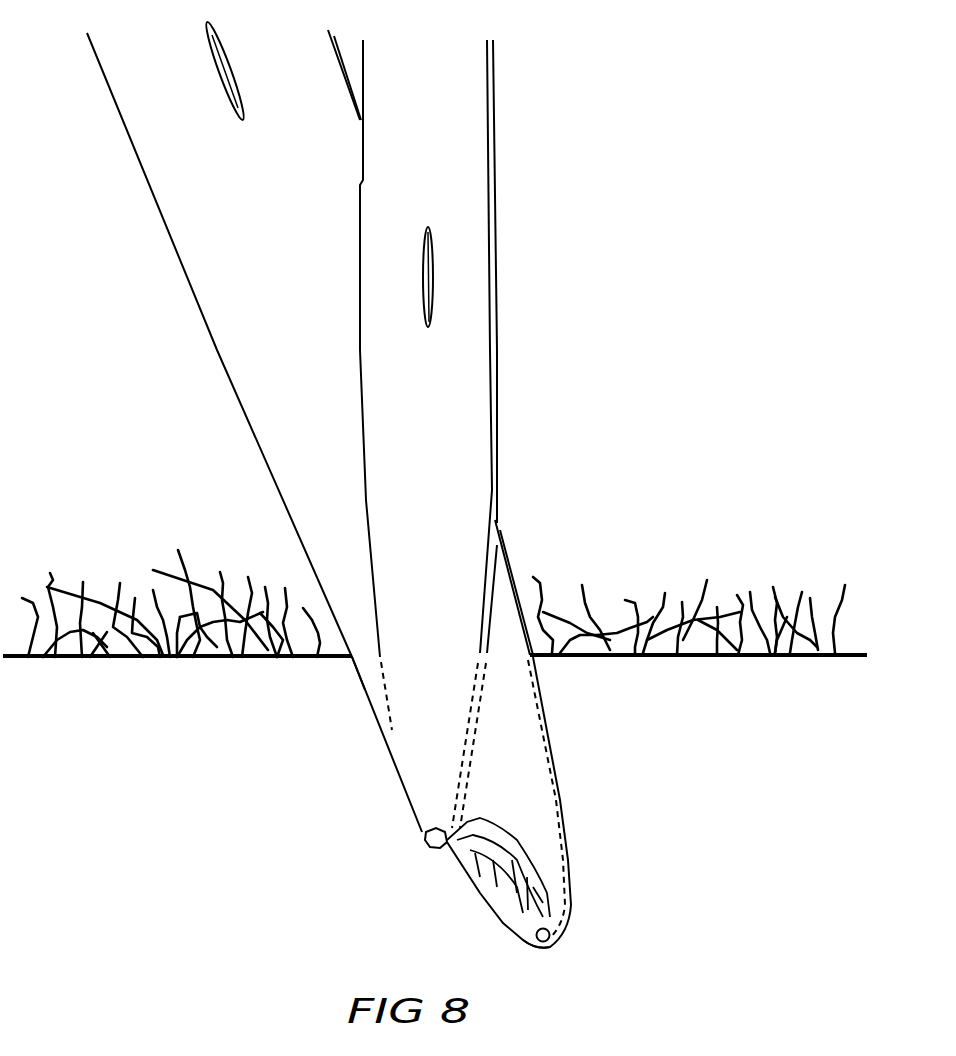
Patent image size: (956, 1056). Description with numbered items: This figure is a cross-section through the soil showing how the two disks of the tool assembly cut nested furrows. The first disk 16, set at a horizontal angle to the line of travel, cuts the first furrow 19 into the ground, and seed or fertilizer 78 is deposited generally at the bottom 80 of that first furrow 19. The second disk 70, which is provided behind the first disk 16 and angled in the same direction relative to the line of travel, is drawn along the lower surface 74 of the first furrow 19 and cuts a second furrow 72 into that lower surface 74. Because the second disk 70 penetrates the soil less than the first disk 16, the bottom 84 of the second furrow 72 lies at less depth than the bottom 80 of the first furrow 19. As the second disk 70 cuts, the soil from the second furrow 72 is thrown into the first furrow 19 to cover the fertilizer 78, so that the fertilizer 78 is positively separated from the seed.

The first disk 16 is at (265, 358).
The second disk 70 is at (453, 350).
The lower surface 74 is at (362, 681).
The second furrow 72 is at (463, 820).
The first furrow 19 is at (520, 800).
The fertilizer 78 is at (553, 920).
The bottom of first furrow 80 is at (547, 948).
The bottom of second furrow 84 is at (433, 848).